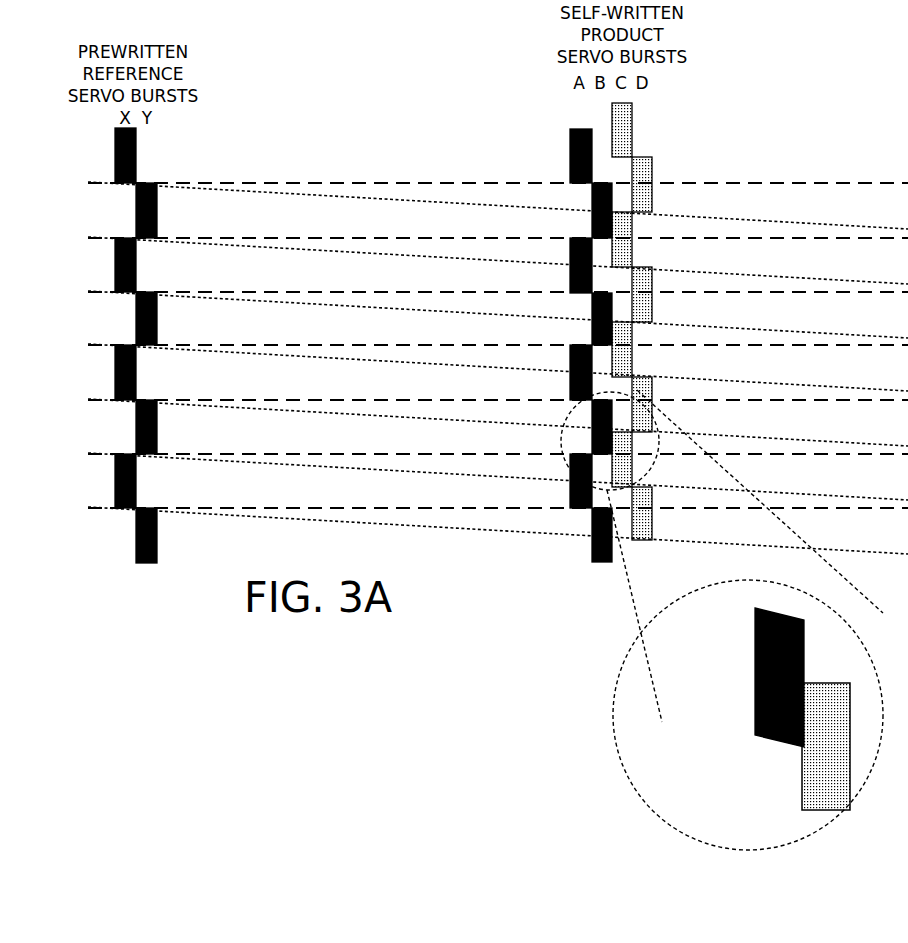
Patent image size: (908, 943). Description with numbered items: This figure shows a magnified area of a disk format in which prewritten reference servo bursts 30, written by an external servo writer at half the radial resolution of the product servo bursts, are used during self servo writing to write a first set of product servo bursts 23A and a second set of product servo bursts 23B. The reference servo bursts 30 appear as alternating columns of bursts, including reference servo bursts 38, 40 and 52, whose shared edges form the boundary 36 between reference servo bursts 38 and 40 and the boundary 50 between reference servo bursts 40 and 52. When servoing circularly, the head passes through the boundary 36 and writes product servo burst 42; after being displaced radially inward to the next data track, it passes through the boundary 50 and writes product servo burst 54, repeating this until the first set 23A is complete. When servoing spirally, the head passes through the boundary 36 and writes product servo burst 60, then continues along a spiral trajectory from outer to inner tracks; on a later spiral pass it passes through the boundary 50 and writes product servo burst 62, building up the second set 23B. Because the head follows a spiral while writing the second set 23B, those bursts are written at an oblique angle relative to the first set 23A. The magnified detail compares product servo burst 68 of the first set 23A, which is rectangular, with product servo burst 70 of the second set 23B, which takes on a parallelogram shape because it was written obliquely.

The reference servo bursts 30 is at (127, 577).
The boundary 36 is at (138, 185).
The reference servo burst 38 is at (115, 152).
The reference servo burst 40 is at (158, 215).
The boundary 50 is at (135, 238).
The reference servo burst 52 is at (115, 262).
The product servo burst 54 is at (632, 253).
The product servo burst 60 is at (592, 222).
The product servo burst 62 is at (570, 275).
The product servo burst 42 is at (652, 160).
The first set of product servo bursts 23A is at (655, 119).
The second set of product servo bursts 23B is at (568, 119).
The product servo burst 68 is at (850, 727).
The product servo burst 70 is at (755, 680).